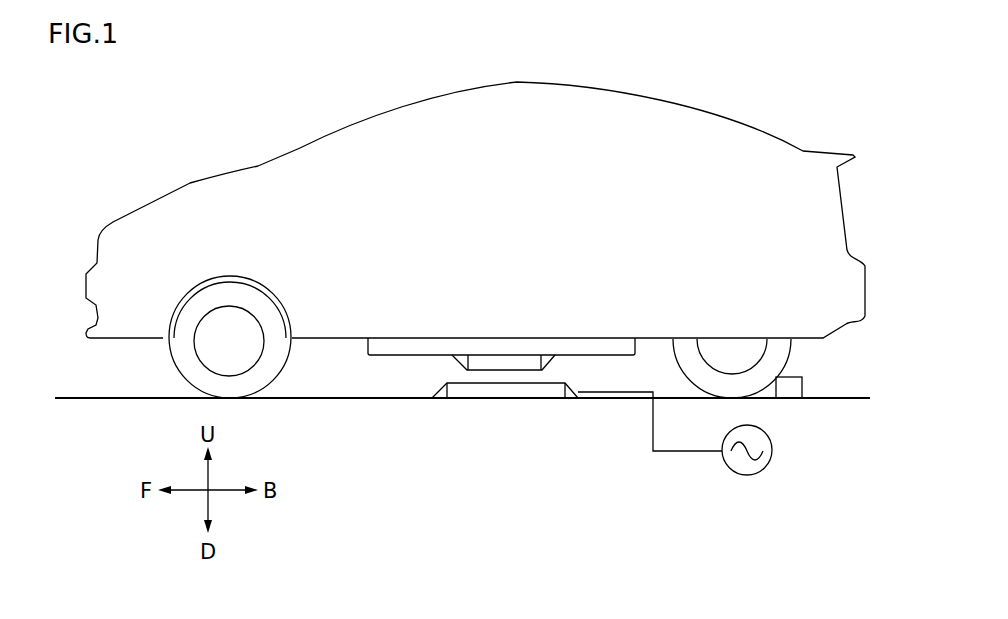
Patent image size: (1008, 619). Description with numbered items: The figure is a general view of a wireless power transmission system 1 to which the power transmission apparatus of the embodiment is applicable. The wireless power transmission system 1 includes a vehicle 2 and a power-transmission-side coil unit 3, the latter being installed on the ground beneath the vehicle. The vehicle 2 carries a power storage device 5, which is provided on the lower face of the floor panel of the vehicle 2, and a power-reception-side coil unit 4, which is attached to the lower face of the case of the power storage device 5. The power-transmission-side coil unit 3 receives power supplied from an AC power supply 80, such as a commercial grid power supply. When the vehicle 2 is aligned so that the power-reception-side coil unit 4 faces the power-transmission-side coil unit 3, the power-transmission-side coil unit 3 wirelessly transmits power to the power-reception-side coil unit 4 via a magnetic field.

The wireless power transmission system 1 is at (201, 100).
The vehicle 2 is at (517, 82).
The power-transmission-side coil unit 3 is at (488, 398).
The power-reception-side coil unit 4 is at (523, 362).
The power storage device 5 is at (593, 345).
The AC power supply 80 is at (772, 450).